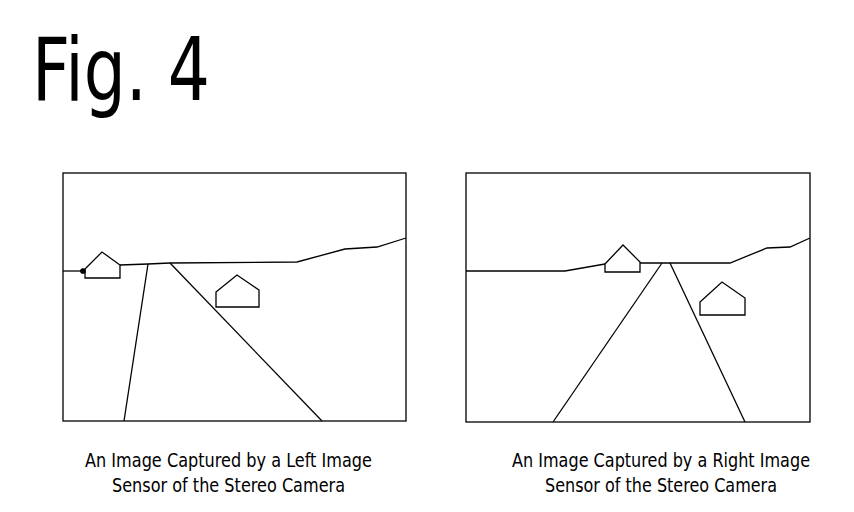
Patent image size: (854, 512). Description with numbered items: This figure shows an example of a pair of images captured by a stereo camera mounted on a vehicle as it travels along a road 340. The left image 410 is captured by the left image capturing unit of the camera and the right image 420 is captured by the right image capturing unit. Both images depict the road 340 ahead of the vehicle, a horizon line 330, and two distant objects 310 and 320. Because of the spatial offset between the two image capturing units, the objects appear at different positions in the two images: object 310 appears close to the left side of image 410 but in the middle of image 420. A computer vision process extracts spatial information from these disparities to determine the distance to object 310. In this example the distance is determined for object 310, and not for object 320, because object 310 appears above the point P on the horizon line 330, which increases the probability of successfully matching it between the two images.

The object 310 is at (116, 264).
The object 320 is at (262, 288).
The horizon line 330 is at (345, 250).
The road 340 is at (277, 407).
The image 410 is at (327, 173).
The image 420 is at (698, 173).
The point P is at (83, 273).